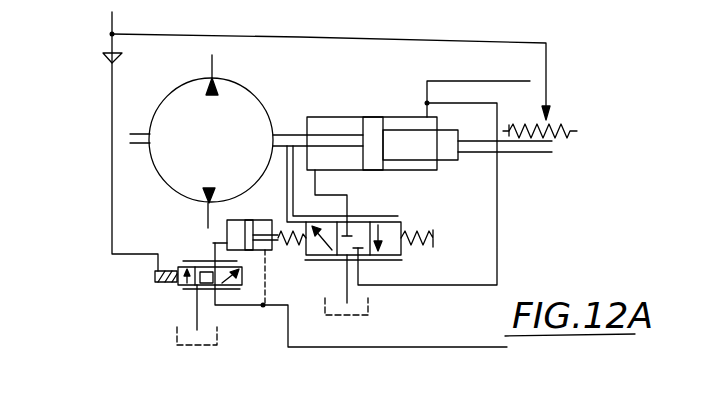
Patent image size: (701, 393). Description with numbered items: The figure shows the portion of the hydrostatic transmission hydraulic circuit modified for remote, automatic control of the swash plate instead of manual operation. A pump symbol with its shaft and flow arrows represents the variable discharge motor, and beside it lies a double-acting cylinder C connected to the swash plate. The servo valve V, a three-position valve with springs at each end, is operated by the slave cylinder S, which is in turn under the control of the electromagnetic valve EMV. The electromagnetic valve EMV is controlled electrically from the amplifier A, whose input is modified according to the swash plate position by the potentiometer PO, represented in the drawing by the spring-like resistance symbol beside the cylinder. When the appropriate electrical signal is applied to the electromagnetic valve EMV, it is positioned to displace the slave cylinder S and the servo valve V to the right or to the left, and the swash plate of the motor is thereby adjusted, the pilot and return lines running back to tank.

The amplifier A is at (105, 58).
The control cylinder C is at (390, 118).
The potentiometer PO is at (552, 122).
The slave cylinder S is at (227, 227).
The servo valve V is at (383, 258).
The electromagnetic valve EMV is at (183, 290).